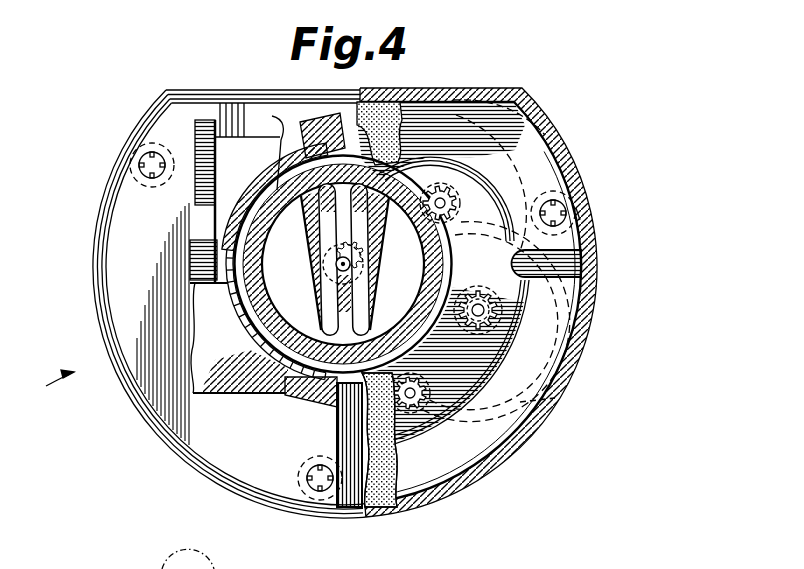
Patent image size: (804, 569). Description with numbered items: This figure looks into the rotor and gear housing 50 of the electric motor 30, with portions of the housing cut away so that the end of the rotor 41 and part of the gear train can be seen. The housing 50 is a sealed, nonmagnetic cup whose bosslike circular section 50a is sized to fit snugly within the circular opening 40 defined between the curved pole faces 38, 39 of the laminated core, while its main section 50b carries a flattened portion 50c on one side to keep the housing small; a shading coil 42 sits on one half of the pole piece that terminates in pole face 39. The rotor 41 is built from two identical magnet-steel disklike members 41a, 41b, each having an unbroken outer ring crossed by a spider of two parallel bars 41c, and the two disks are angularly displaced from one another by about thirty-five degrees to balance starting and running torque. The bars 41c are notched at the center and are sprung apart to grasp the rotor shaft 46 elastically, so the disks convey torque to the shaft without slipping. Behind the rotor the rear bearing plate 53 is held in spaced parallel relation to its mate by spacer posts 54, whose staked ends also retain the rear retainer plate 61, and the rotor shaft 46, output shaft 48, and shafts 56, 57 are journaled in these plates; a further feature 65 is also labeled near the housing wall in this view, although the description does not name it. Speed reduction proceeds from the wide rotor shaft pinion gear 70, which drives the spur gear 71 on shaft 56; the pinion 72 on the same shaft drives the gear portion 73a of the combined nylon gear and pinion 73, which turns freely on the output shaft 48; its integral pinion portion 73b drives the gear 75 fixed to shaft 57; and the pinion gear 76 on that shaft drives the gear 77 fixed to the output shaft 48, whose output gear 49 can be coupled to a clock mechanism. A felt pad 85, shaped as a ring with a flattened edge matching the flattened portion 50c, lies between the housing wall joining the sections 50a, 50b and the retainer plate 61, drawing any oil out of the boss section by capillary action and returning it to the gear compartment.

The electric motor 30 is at (47, 376).
The pole face 38 is at (292, 399).
The pole face 39 is at (342, 392).
The circular opening 40 is at (259, 336).
The rotor 41 is at (249, 148).
The disklike member 41a is at (322, 126).
The disklike member 41b is at (303, 328).
The parallel bars 41c is at (316, 248).
The shading coil 42 is at (196, 126).
The rotor shaft 46 is at (336, 265).
The output shaft 48 is at (484, 305).
The output gear 49 is at (512, 318).
The rotor and gear housing 50 is at (140, 415).
The bosslike circular section 50a is at (270, 203).
The main section 50b is at (575, 155).
The flattened portion 50c is at (214, 96).
The rear bearing plate 53 is at (463, 90).
The spacer posts 54 is at (130, 167).
The shaft 56 is at (453, 201).
The shaft 57 is at (413, 381).
The rear retainer plate 61 is at (569, 292).
The screw hole 65 is at (579, 217).
The rotor shaft pinion gear 70 is at (378, 288).
The spur gear 71 is at (548, 127).
The pinion 72 is at (442, 196).
The combined gear and pinion 73 is at (572, 297).
The gear portion 73a is at (469, 195).
The pinion portion 73b is at (552, 348).
The gear 75 is at (542, 367).
The pinion gear 76 is at (402, 440).
The gear 77 is at (556, 402).
The felt pad 85 is at (377, 519).